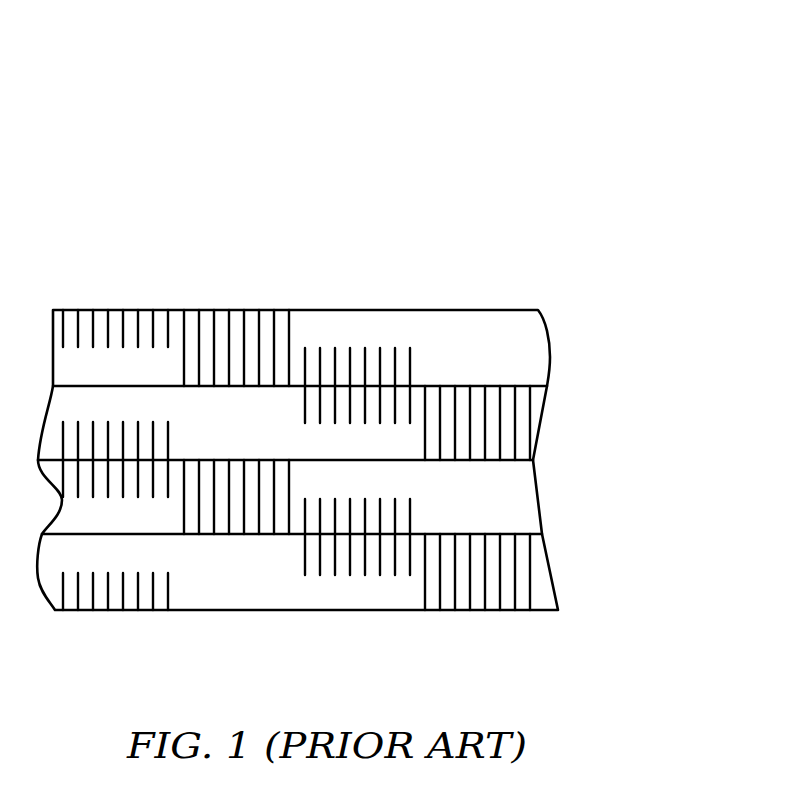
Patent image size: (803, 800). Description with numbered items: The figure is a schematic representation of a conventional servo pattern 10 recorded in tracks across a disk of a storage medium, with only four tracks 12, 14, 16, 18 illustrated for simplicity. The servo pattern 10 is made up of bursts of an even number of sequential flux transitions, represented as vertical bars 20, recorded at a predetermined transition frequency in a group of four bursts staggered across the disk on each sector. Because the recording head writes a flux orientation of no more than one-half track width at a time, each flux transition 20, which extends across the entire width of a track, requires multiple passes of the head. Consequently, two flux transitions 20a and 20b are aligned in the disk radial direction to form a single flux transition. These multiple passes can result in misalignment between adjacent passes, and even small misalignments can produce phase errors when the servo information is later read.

The conventional servo pattern 10 is at (318, 102).
The track 12 is at (615, 350).
The track 14 is at (615, 425).
The track 16 is at (615, 497).
The track 18 is at (615, 578).
The flux transition 20 is at (314, 290).
The flux transition 20a is at (187, 314).
The flux transition 20b is at (184, 365).